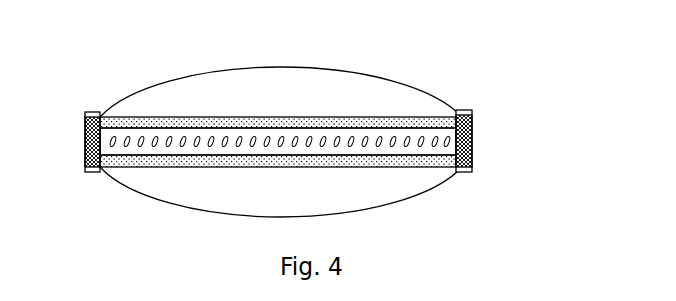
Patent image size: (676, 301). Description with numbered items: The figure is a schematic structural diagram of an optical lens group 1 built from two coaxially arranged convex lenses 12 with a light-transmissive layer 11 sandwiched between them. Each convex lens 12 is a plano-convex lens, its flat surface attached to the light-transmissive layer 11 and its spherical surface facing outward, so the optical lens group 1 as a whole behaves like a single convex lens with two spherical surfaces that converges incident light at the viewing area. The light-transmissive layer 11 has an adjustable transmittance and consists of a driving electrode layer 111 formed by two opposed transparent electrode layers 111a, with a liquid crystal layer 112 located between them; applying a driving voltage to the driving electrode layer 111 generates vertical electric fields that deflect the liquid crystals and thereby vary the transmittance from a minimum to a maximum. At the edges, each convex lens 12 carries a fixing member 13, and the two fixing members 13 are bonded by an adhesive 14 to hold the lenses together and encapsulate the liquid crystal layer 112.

The optical lens group 1 is at (130, 62).
The light-transmissive layer 11 is at (316, 136).
The driving electrode layer 111 is at (334, 152).
The transparent electrode layer 111a is at (432, 123).
The liquid crystal layer 112 is at (529, 125).
The convex lens 12 is at (365, 90).
The fixing member 13 is at (100, 115).
The adhesive 14 is at (85, 138).